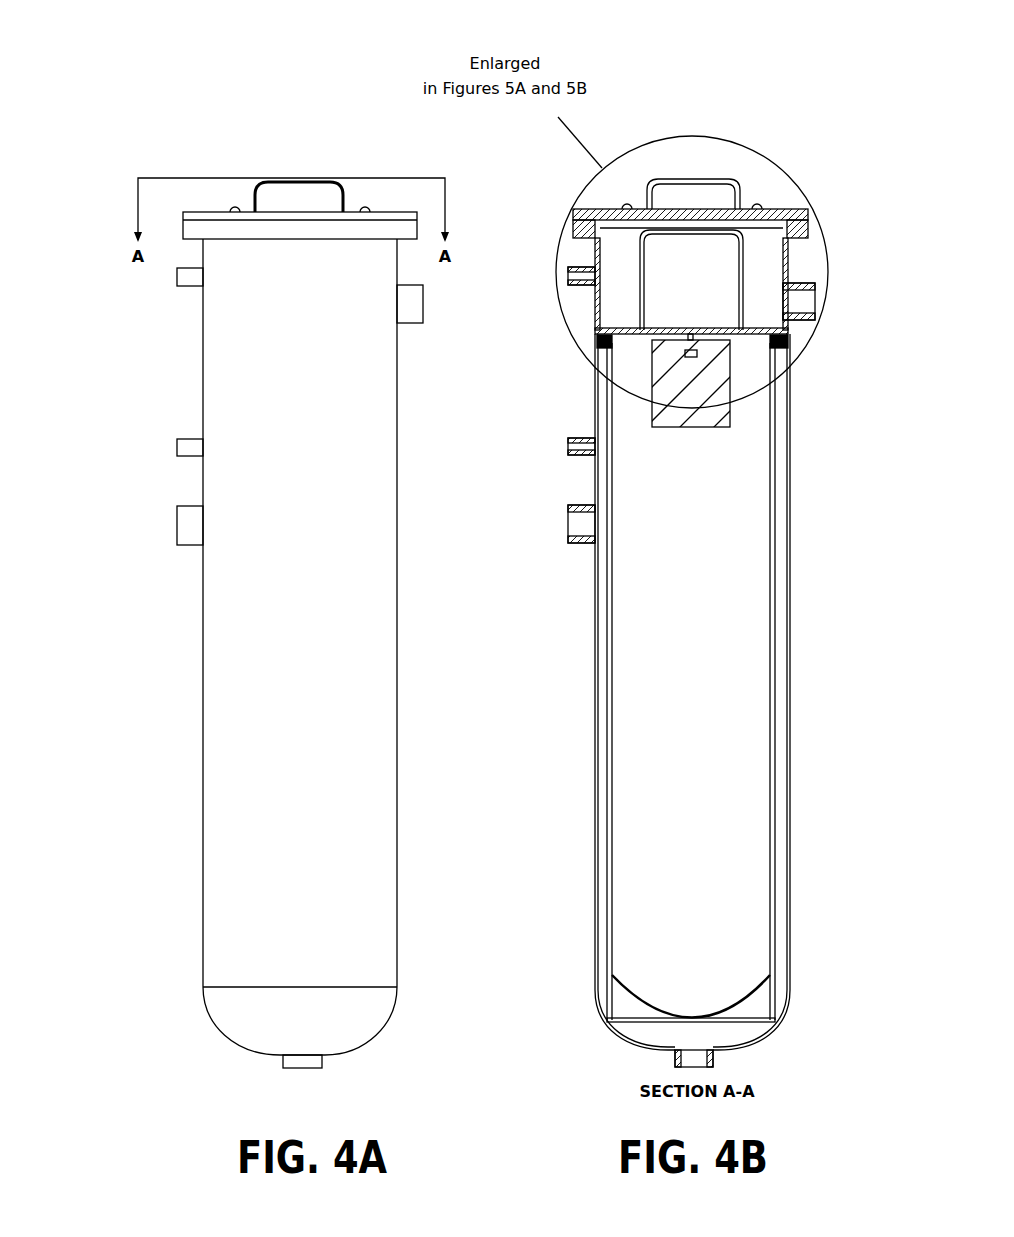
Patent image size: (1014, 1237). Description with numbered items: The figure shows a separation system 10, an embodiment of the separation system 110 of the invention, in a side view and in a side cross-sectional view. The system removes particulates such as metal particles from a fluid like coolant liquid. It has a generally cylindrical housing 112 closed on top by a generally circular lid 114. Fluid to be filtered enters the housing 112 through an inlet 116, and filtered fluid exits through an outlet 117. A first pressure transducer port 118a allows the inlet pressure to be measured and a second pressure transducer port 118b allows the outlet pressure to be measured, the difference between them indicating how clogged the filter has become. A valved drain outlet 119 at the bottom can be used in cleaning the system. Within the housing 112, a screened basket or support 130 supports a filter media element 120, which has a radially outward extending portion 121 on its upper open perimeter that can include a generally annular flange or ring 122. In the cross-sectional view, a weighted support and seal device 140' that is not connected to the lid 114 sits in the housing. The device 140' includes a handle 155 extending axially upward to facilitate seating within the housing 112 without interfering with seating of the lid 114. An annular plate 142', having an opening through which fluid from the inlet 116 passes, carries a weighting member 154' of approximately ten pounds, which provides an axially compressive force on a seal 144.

In FIG. 4A, the separation system 10 is at (103, 237).
In FIG. 4B, the separation system 10 is at (817, 857).
In FIG. 4A, the separation system 110 is at (190, 780).
In FIG. 4B, the separation system 110 is at (587, 780).
In FIG. 4A, the housing 112 is at (197, 385).
In FIG. 4B, the housing 112 is at (593, 390).
In FIG. 4A, the lid 114 is at (173, 220).
In FIG. 4B, the lid 114 is at (780, 208).
In FIG. 4A, the inlet 116 is at (413, 315).
In FIG. 4B, the inlet 116 is at (806, 300).
In FIG. 4A, the outlet 117 is at (178, 546).
In FIG. 4B, the outlet 117 is at (563, 530).
In FIG. 4A, the first pressure transducer port 118a is at (178, 287).
In FIG. 4B, the first pressure transducer port 118a is at (568, 282).
In FIG. 4A, the second pressure transducer port 118b is at (172, 458).
In FIG. 4B, the second pressure transducer port 118b is at (567, 453).
In FIG. 4A, the valved drain outlet 119 is at (278, 1063).
In FIG. 4B, the valved drain outlet 119 is at (675, 1060).
In FIG. 4B, the filter media element 120 is at (615, 527).
In FIG. 4B, the radially outward extending portion 121 is at (616, 340).
In FIG. 4B, the annular flange 122 is at (787, 347).
In FIG. 4B, the support 130 is at (788, 387).
In FIG. 4B, the weighted support and seal device 140' is at (627, 234).
In FIG. 4B, the annular plate 142' is at (764, 383).
In FIG. 4B, the seal 144 is at (787, 338).
In FIG. 4B, the weighting member 154' is at (721, 410).
In FIG. 4B, the handle 155 is at (745, 260).